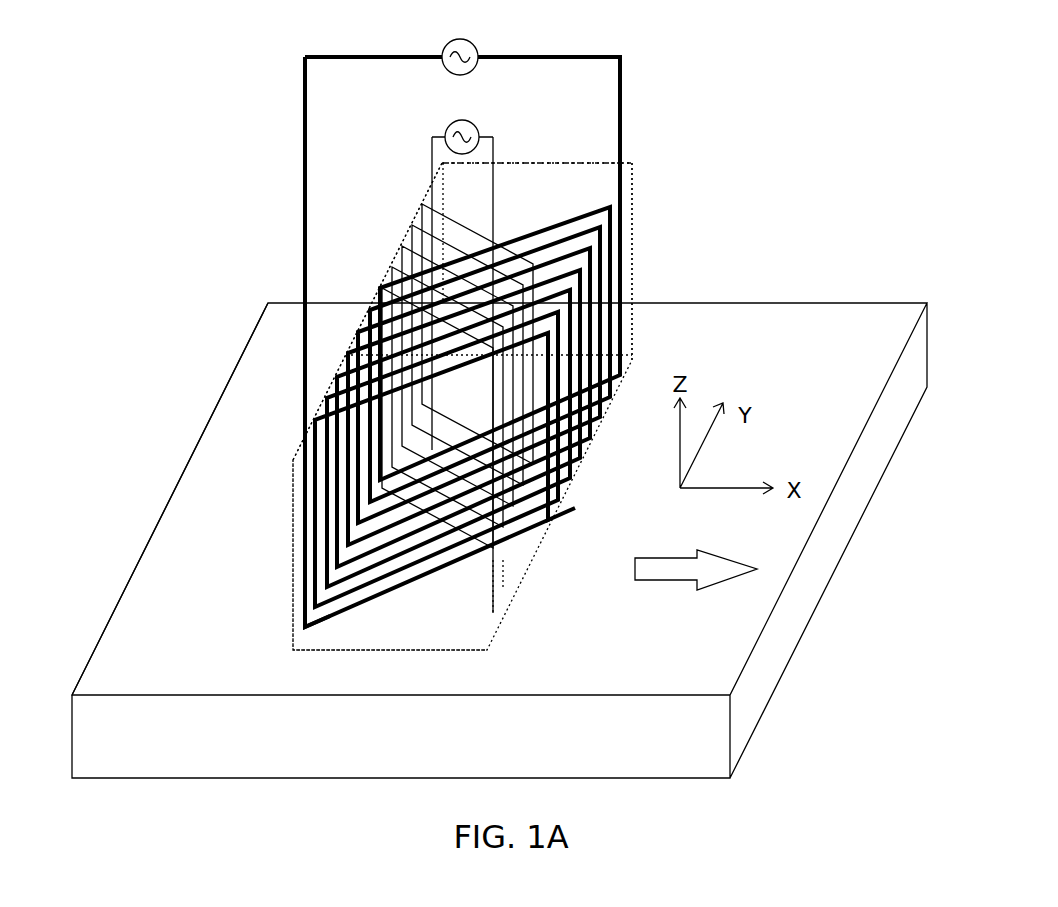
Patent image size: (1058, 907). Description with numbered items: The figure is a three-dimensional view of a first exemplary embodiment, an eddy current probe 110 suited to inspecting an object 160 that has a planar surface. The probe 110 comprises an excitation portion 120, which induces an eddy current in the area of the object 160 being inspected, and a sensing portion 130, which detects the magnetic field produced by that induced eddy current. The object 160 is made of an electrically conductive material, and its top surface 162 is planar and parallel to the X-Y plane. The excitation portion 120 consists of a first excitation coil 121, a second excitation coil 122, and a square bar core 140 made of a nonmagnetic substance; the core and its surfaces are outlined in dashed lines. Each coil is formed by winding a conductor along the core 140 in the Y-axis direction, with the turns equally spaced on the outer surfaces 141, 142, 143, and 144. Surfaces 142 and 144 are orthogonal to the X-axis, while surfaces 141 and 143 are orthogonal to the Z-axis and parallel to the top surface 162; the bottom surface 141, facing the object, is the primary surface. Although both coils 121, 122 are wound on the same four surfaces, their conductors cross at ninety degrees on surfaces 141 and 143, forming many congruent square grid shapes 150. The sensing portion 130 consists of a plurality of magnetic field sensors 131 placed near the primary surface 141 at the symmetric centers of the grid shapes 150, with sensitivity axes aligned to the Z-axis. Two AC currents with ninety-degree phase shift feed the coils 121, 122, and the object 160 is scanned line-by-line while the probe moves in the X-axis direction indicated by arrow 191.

The eddy current probe 110 is at (313, 388).
The excitation portion 120 is at (293, 557).
The first excitation coil 121 is at (500, 607).
The second excitation coil 122 is at (300, 623).
The sensing portion 130 is at (400, 563).
The magnetic field sensor 131 is at (470, 568).
The square bar core 140 is at (632, 168).
The bottom surface 141 is at (444, 652).
The outer surface 142 is at (632, 215).
The outer surface 143 is at (597, 175).
The outer surface 144 is at (427, 217).
The square grid shape 150 is at (545, 527).
The object 160 is at (188, 463).
The top surface 162 is at (183, 535).
The arrow 191 is at (665, 590).